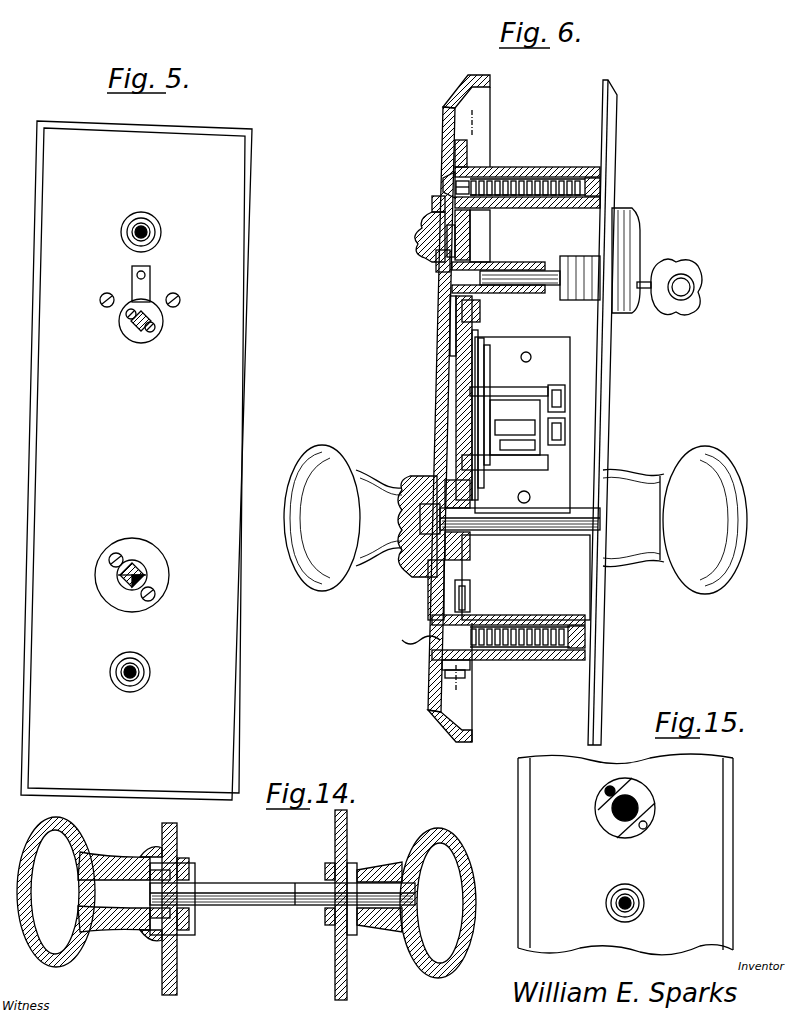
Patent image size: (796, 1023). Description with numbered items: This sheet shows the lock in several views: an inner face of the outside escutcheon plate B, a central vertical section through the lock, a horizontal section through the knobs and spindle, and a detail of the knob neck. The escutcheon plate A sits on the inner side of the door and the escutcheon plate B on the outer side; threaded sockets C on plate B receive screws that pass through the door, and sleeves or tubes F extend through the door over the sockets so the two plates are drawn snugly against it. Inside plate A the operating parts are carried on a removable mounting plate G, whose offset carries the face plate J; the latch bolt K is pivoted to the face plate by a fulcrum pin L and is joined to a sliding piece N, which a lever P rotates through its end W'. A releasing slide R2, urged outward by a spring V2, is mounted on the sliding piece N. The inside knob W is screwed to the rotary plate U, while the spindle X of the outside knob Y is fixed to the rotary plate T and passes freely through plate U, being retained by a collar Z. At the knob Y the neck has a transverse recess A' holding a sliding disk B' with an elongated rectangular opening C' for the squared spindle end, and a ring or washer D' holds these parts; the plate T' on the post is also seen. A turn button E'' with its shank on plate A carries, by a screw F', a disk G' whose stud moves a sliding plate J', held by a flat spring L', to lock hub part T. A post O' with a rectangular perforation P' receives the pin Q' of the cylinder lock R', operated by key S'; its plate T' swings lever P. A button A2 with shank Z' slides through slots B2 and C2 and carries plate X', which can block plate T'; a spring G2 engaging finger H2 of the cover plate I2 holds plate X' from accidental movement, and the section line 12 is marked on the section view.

In FIG. 6, the escutcheon plate A is at (448, 407).
In FIG. 14, the escutcheon plate A is at (187, 913).
In FIG. 5, the escutcheon plate B is at (146, 460).
In FIG. 6, the escutcheon plate B is at (624, 412).
In FIG. 14, the escutcheon plate B is at (322, 905).
In FIG. 15, the escutcheon plate B is at (644, 854).
In FIG. 5, the sockets C is at (155, 451).
In FIG. 6, the sockets C is at (570, 660).
In FIG. 5, the pin or spindle of cylinder lock Q' is at (156, 304).
In FIG. 6, the pin or spindle of cylinder lock Q' is at (568, 289).
In FIG. 5, the ring or washer D' is at (149, 575).
In FIG. 14, the ring or washer D' is at (311, 882).
In FIG. 5, the sliding disk B' is at (162, 577).
In FIG. 14, the sliding disk B' is at (363, 886).
In FIG. 5, the rectangular opening C' is at (121, 600).
In FIG. 6, the rectangular opening C' is at (590, 157).
In FIG. 14, the rectangular opening C' is at (383, 882).
In FIG. 15, the rectangular opening C' is at (644, 903).
In FIG. 5, the spindle X is at (97, 577).
In FIG. 6, the spindle X is at (510, 542).
In FIG. 14, the spindle X is at (282, 913).
In FIG. 6, the section line 12 is at (463, 401).
In FIG. 6, the sleeves or tubes F is at (527, 168).
In FIG. 6, the mounting plate G is at (441, 146).
In FIG. 14, the mounting plate G is at (197, 915).
In FIG. 6, the spring G2 is at (450, 180).
In FIG. 6, the slot B2 is at (455, 187).
In FIG. 6, the slot C2 is at (432, 204).
In FIG. 6, the button A2 is at (420, 236).
In FIG. 6, the shank Z' is at (428, 266).
In FIG. 6, the plate X' is at (481, 235).
In FIG. 6, the rectangular perforation P' is at (498, 262).
In FIG. 6, the post O' is at (520, 258).
In FIG. 6, the cylinder lock R' is at (647, 260).
In FIG. 6, the key S' is at (681, 296).
In FIG. 6, the end of lever W' is at (437, 397).
In FIG. 6, the cover plate I2 is at (480, 312).
In FIG. 6, the finger H2 is at (452, 345).
In FIG. 6, the lever P is at (440, 415).
In FIG. 6, the sliding piece N is at (450, 408).
In FIG. 6, the face plate J is at (530, 478).
In FIG. 6, the spring V2 is at (487, 380).
In FIG. 6, the releasing slide R2 is at (496, 410).
In FIG. 6, the fulcrum pin L is at (593, 383).
In FIG. 6, the latch bolt K is at (565, 425).
In FIG. 6, the knob W is at (343, 537).
In FIG. 14, the knob W is at (83, 905).
In FIG. 6, the collar Z is at (409, 527).
In FIG. 14, the collar Z is at (139, 841).
In FIG. 6, the rotary plate U is at (432, 584).
In FIG. 14, the rotary plate U is at (145, 940).
In FIG. 6, the rotary plate T is at (475, 526).
In FIG. 6, the flat spring L' is at (489, 596).
In FIG. 6, the screw F' is at (508, 664).
In FIG. 6, the sliding plate J' is at (476, 682).
In FIG. 6, the disk G' is at (479, 701).
In FIG. 6, the wire E'' is at (416, 666).
In FIG. 6, the knob Y is at (672, 590).
In FIG. 14, the knob Y is at (402, 965).
In FIG. 15, the knob Y is at (650, 821).
In FIG. 14, the plate T' is at (193, 894).
In FIG. 15, the transverse recess A' is at (647, 806).